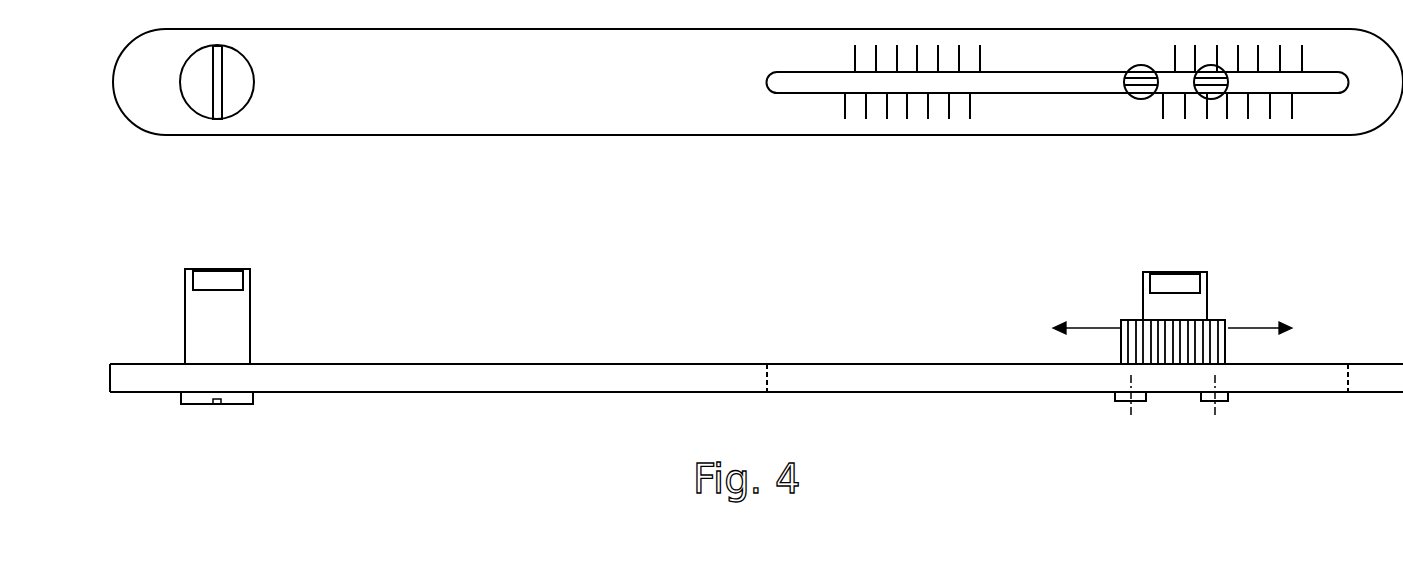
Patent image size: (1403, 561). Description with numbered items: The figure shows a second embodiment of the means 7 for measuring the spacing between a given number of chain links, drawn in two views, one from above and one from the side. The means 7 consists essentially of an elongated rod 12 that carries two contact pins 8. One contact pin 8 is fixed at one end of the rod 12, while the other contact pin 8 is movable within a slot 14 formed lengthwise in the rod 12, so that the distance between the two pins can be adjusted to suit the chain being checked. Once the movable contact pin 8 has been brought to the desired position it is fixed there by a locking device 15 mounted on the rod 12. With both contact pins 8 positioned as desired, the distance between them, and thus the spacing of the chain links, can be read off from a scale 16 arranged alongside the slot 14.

The means for measuring the spacing 7 is at (756, 261).
The contact pin 8 is at (232, 328).
The rod 12 is at (757, 115).
The slot 14 is at (1040, 80).
The locking device 15 is at (1202, 337).
The scale 16 is at (1217, 105).